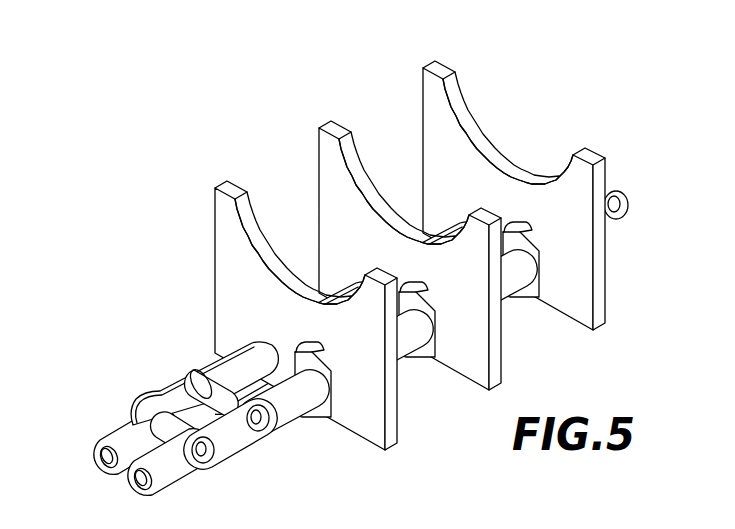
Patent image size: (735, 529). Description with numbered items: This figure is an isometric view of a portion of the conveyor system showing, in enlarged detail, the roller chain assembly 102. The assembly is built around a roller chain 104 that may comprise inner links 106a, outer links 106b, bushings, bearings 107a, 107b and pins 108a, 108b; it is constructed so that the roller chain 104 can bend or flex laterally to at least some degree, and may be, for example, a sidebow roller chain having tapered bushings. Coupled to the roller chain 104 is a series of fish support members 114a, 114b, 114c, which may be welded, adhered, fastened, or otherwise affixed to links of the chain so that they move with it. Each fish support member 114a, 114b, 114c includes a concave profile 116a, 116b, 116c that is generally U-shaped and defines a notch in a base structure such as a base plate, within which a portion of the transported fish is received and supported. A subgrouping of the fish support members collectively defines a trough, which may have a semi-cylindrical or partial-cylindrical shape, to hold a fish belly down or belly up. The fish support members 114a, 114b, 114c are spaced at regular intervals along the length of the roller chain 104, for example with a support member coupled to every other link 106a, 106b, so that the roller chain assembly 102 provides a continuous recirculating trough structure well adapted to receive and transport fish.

The roller chain assembly 102 is at (652, 113).
The roller chain 104 is at (191, 408).
The inner links 106a is at (165, 466).
The outer links 106b is at (231, 441).
The bearing 107a is at (133, 428).
The bearing 107b is at (220, 398).
The pin 108a is at (208, 459).
The pin 108b is at (263, 424).
The fish support member 114a is at (220, 182).
The fish support member 114b is at (324, 124).
The fish support member 114c is at (428, 64).
The concave profile 116a is at (251, 229).
The concave profile 116b is at (352, 170).
The concave profile 116c is at (458, 110).